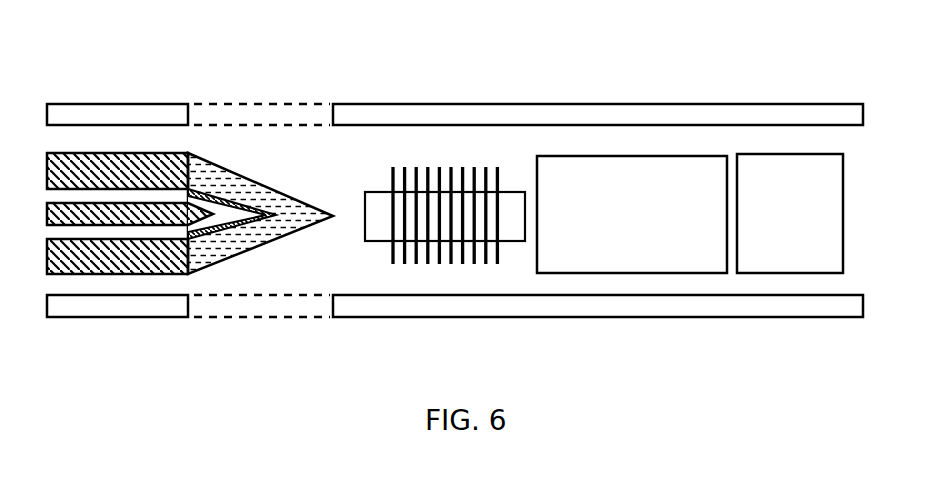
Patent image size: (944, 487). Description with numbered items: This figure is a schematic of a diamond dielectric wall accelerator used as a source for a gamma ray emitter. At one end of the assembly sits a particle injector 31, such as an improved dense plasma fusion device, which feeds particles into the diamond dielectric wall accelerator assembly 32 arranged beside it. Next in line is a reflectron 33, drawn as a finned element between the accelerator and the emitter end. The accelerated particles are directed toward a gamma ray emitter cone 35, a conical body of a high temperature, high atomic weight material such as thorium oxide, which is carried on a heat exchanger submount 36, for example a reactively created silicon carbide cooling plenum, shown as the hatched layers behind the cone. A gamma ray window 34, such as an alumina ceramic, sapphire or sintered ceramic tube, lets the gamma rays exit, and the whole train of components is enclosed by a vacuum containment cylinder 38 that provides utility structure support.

The particle injector 31 is at (785, 188).
The diamond dielectric wall accelerator assembly 32 is at (634, 178).
The reflectron 33 is at (437, 215).
The gamma ray window 34 is at (318, 303).
The gamma ray emitter cone 35 is at (270, 233).
The heat exchanger submount 36 is at (155, 248).
The vacuum containment cylinder 38 is at (525, 305).